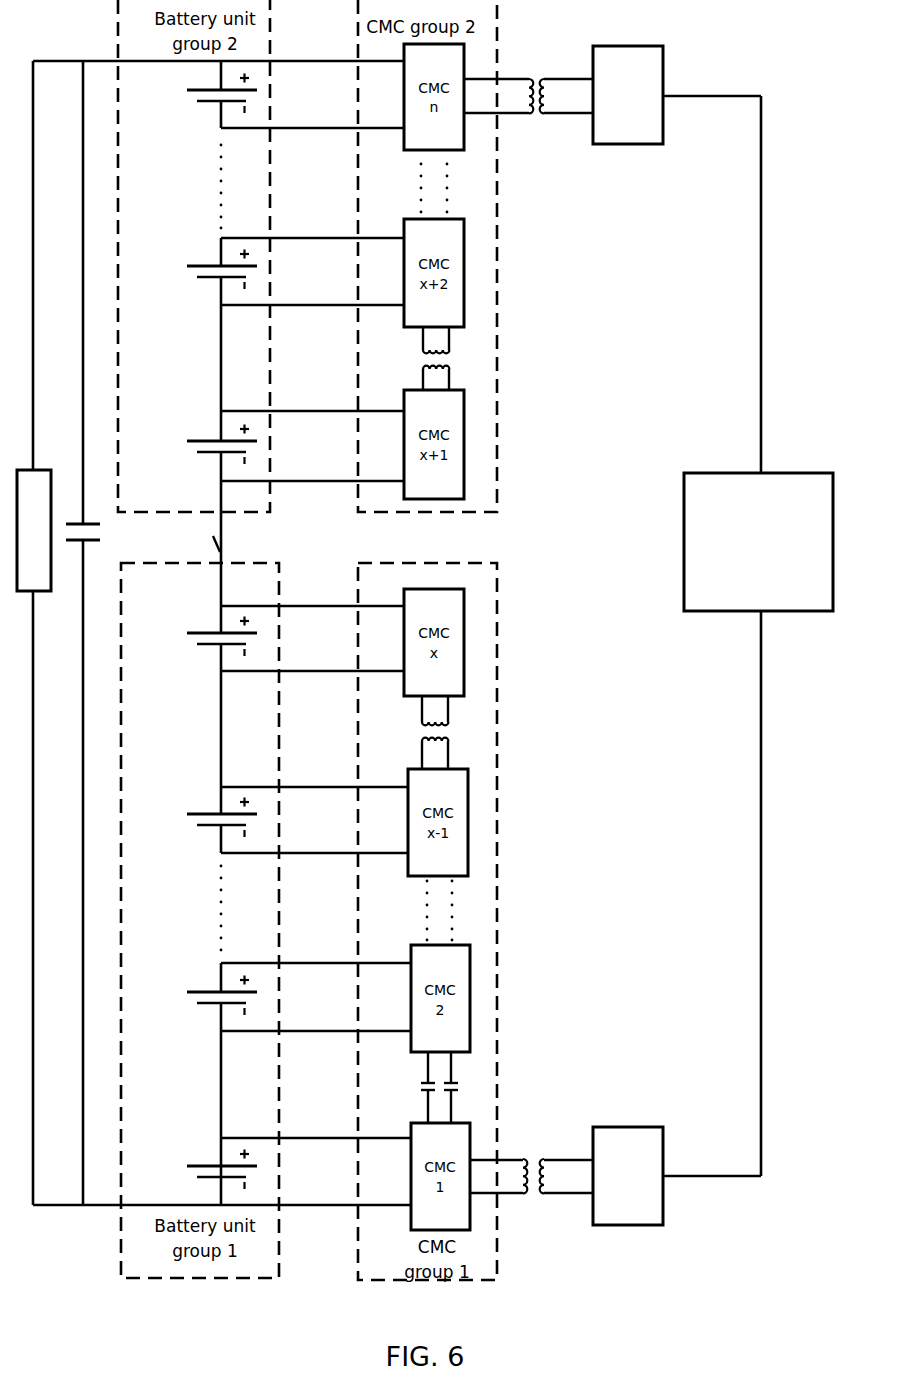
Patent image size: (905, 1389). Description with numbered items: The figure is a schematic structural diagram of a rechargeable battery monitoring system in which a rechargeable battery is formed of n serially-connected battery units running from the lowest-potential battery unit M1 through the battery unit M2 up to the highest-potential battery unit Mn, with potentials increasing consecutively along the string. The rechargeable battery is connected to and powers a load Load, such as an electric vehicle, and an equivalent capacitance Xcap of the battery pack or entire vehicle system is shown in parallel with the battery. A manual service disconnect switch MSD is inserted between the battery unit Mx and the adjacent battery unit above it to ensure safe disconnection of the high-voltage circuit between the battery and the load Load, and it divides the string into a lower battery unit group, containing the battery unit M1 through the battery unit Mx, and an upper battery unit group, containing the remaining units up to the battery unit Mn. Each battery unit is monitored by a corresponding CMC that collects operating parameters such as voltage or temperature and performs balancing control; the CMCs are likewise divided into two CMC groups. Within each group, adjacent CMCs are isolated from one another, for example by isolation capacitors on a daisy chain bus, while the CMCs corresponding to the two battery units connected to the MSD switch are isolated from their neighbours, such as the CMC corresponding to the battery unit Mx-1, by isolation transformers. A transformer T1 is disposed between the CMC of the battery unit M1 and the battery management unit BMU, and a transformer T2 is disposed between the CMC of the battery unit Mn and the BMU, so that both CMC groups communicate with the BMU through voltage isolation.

The highest-potential battery unit Mn is at (203, 94).
The battery unit Mx is at (203, 638).
The battery unit Mx-1 is at (200, 821).
The battery unit M2 is at (204, 999).
The lowest-potential battery unit M1 is at (203, 1170).
The transformer T1 is at (566, 1176).
The transformer T2 is at (563, 95).
The battery management unit BMU is at (758, 542).
The load Load is at (36, 530).
The equivalent capacitance Xcap is at (103, 540).
The manual service disconnect switch MSD is at (241, 545).